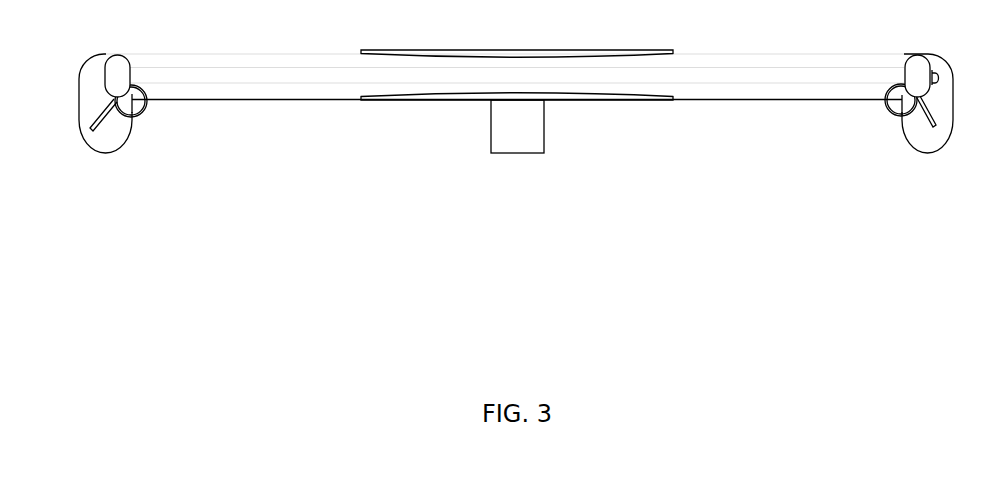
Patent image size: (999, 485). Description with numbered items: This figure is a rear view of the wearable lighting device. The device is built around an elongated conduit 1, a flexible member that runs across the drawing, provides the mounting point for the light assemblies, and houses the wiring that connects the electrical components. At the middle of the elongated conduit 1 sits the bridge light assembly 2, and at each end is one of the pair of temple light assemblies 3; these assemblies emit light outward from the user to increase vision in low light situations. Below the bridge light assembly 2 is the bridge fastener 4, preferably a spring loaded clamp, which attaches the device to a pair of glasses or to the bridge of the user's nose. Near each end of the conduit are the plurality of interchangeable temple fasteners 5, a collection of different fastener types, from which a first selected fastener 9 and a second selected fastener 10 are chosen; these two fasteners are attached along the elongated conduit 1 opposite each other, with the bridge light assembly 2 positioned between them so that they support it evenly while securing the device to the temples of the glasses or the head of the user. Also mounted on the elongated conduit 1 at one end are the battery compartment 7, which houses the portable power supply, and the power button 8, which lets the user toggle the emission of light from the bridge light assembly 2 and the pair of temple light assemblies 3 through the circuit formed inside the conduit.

The elongated conduit 1 is at (231, 59).
The bridge light assembly 2 is at (497, 55).
The pair of temple light assemblies 3 is at (108, 158).
The bridge fastener 4 is at (516, 154).
The plurality of interchangeable temple fasteners 5 is at (159, 108).
The battery compartment 7 is at (936, 103).
The power button 8 is at (938, 77).
The first selected fastener 9 is at (140, 115).
The second selected fastener 10 is at (893, 115).